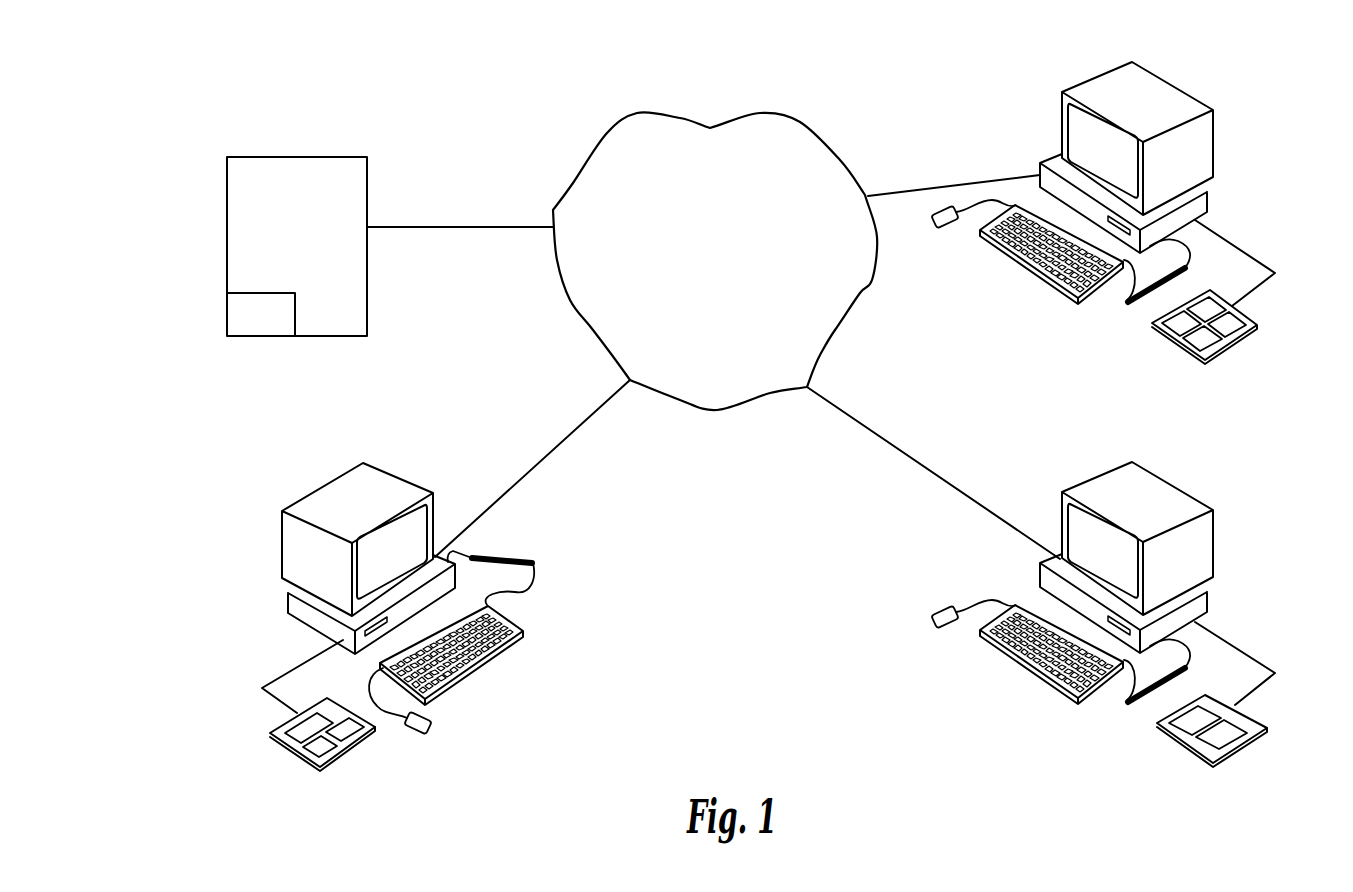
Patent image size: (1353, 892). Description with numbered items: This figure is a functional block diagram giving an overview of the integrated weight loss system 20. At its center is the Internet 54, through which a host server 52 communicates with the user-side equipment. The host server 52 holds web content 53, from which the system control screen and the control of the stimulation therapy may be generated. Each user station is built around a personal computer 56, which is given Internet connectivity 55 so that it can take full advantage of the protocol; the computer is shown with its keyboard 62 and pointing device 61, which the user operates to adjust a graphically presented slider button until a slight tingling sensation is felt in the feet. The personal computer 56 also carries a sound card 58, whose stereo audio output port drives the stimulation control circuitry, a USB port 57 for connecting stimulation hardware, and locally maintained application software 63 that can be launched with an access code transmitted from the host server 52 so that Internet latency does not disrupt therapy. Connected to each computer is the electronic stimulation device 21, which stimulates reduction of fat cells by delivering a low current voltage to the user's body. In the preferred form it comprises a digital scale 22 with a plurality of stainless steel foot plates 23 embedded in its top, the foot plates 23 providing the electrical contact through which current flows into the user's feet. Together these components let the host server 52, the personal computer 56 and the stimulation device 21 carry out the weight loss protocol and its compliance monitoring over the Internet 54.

The integrated weight loss system 20 is at (450, 128).
The electronic stimulation device 21 is at (1175, 353).
The digital scale 22 is at (297, 752).
The foot plates 23 is at (1180, 313).
The host server 52 is at (227, 226).
The web content 53 is at (237, 313).
The Internet 54 is at (753, 113).
The Internet connectivity 55 is at (948, 185).
The personal computer 56 is at (1213, 145).
The USB port 57 is at (1210, 600).
The sound card 58 is at (1205, 210).
The pointing device 61 is at (935, 224).
The keyboard 62 is at (1028, 258).
The application software 63 is at (1055, 165).